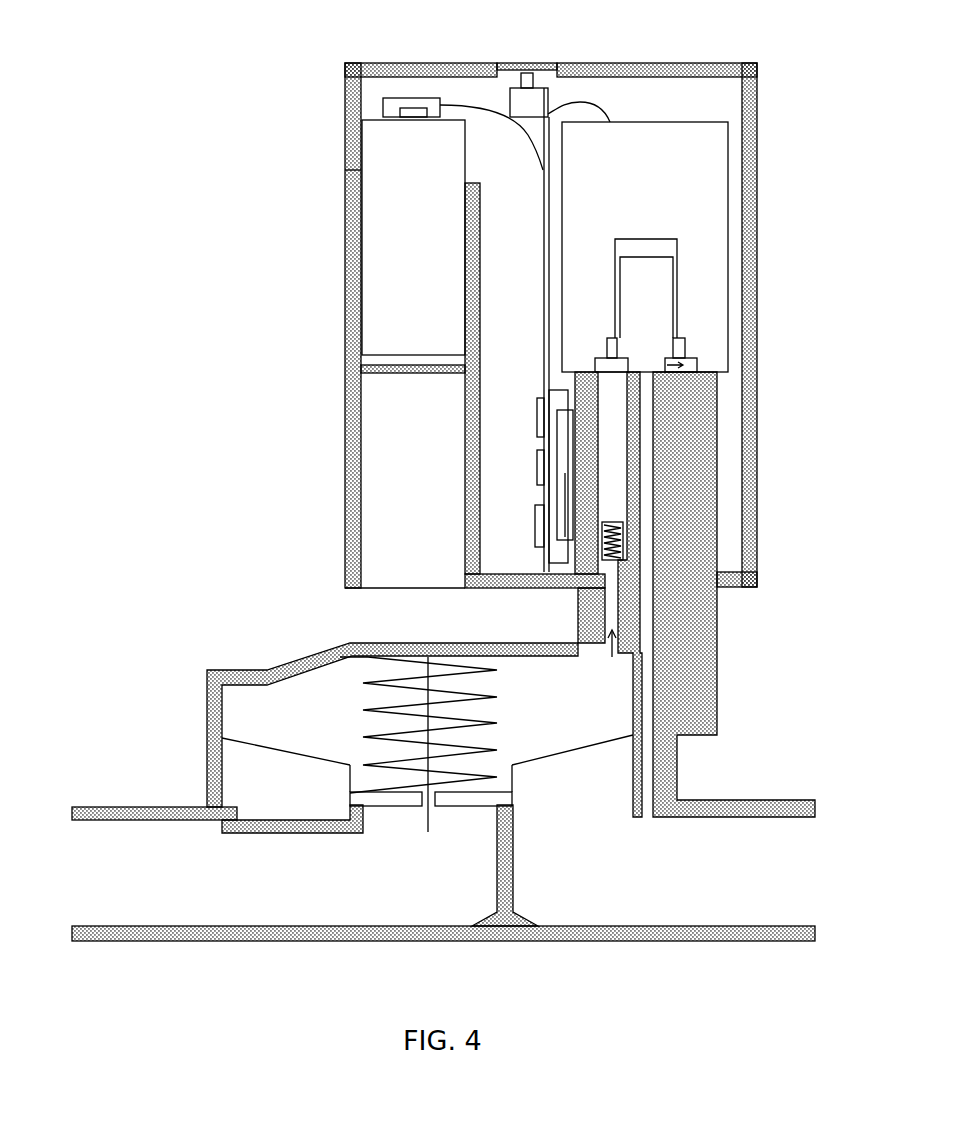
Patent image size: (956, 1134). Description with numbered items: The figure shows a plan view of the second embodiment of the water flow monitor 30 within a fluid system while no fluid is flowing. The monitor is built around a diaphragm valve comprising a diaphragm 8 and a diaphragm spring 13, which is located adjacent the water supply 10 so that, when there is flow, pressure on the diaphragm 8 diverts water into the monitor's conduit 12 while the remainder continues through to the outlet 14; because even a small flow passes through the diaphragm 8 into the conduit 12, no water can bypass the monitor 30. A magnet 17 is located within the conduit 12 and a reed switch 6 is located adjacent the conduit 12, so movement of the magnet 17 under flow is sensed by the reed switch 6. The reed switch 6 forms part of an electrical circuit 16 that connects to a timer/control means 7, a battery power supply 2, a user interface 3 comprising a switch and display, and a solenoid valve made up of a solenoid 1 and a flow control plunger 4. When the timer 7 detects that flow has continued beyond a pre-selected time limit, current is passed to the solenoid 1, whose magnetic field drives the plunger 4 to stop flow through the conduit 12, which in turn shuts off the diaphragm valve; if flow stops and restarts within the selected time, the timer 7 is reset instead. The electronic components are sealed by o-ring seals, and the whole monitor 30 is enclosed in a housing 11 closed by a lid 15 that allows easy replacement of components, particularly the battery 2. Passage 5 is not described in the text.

The solenoid 1 is at (638, 237).
The battery power supply 2 is at (452, 226).
The user interface 3 is at (523, 103).
The flow control plunger 4 is at (650, 325).
The fluid channel 5 is at (613, 398).
The reed switch 6 is at (560, 437).
The timer/control means 7 is at (538, 473).
The diaphragm 8 is at (417, 805).
The water supply 10 is at (443, 792).
The housing 11 is at (345, 348).
The conduit 12 is at (617, 402).
The diaphragm spring 13 is at (363, 683).
The outlet 14 is at (643, 649).
The lid 15 is at (345, 98).
The electrical circuit 16 is at (545, 275).
The magnet 17 is at (613, 542).
The water flow monitor 30 is at (138, 158).